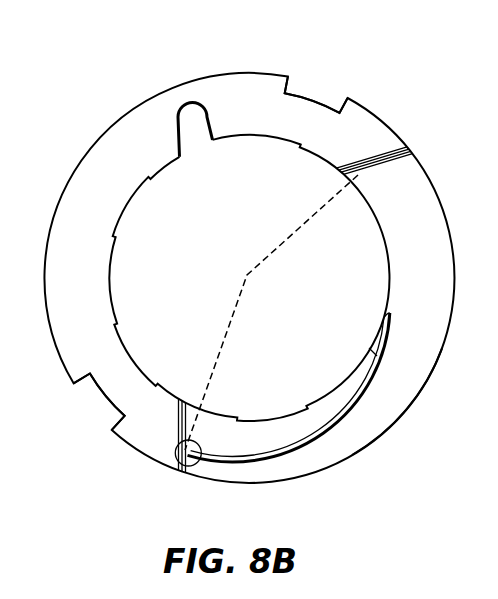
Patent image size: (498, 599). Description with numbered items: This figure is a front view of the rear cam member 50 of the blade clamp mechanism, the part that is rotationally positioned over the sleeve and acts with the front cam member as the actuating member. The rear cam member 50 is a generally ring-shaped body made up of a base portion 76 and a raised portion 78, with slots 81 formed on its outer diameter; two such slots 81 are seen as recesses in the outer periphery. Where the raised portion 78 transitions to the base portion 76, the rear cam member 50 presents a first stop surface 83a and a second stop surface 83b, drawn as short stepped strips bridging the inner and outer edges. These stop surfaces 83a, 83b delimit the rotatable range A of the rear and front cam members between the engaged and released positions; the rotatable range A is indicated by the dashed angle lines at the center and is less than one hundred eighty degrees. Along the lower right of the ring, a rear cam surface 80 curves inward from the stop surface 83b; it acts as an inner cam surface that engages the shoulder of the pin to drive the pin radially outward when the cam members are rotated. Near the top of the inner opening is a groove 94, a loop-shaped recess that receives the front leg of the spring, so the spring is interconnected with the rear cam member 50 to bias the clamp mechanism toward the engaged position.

The rear cam member 50 is at (368, 107).
The slots 81 is at (318, 91).
The raised portion 78 is at (142, 150).
The base portion 76 is at (410, 360).
The groove 94 is at (198, 133).
The first stop surface 83a is at (389, 167).
The second stop surface 83b is at (193, 472).
The rear cam surface 80 is at (316, 438).
The rotatable range A is at (289, 239).